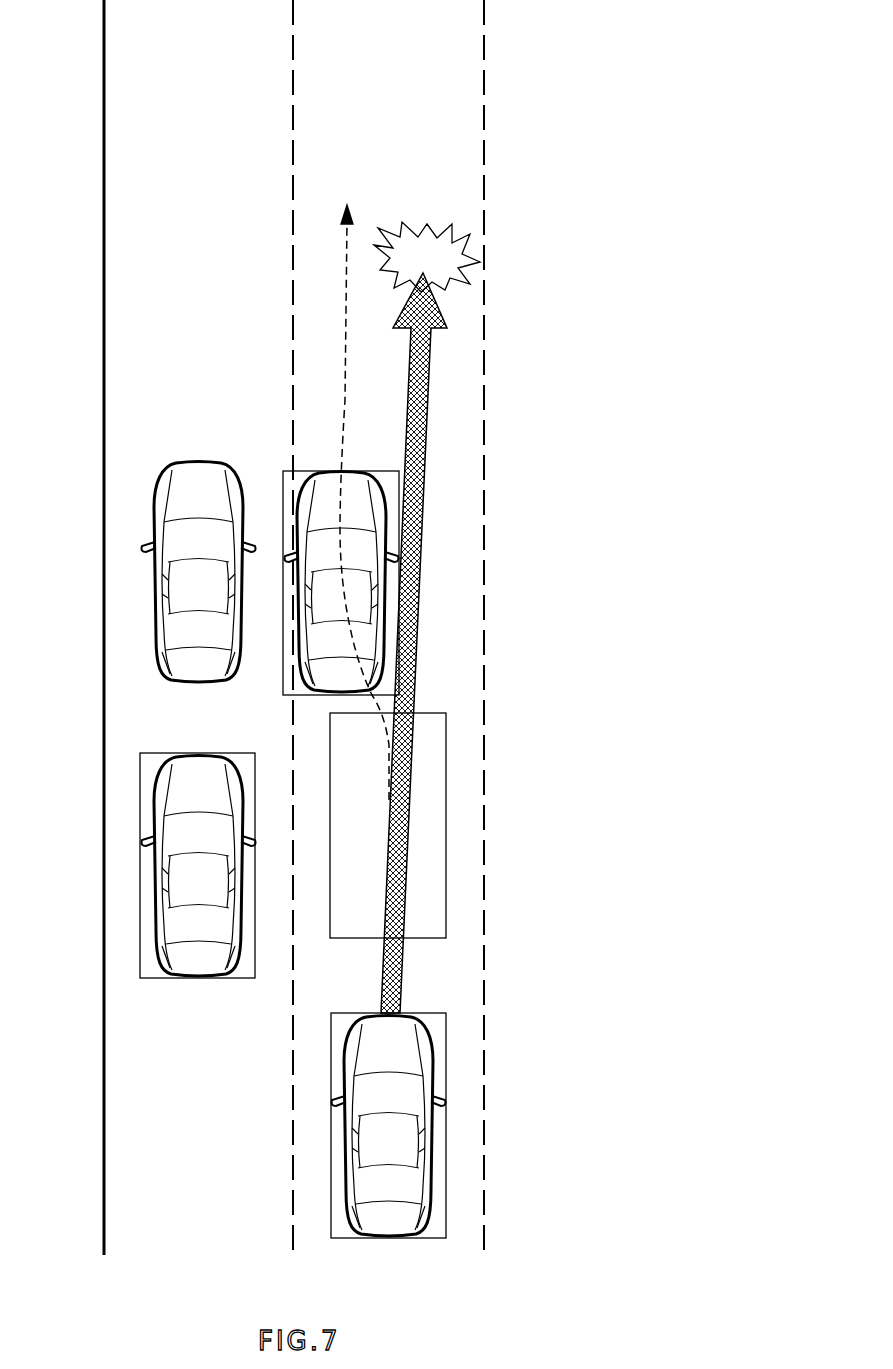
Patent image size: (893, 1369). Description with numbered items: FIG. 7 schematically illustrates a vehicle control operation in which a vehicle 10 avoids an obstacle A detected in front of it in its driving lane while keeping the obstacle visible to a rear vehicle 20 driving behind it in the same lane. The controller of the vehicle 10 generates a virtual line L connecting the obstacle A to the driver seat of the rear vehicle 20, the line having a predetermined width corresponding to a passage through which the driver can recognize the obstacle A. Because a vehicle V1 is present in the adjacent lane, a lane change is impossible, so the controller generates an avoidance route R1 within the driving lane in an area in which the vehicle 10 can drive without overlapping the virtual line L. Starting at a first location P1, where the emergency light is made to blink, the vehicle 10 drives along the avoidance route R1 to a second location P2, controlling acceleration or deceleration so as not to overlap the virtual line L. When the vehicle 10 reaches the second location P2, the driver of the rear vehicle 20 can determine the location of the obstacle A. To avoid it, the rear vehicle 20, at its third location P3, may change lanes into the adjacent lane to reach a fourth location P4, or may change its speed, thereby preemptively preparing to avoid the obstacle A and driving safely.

The vehicle 10 is at (368, 472).
The rear vehicle 20 is at (380, 1118).
The vehicle V1 is at (199, 554).
The first location P1 is at (446, 826).
The second location P2 is at (310, 470).
The third location P3 is at (447, 1127).
The fourth location P4 is at (140, 862).
The avoidance route R1 is at (345, 350).
The obstacle A is at (427, 243).
The virtual line L is at (424, 440).